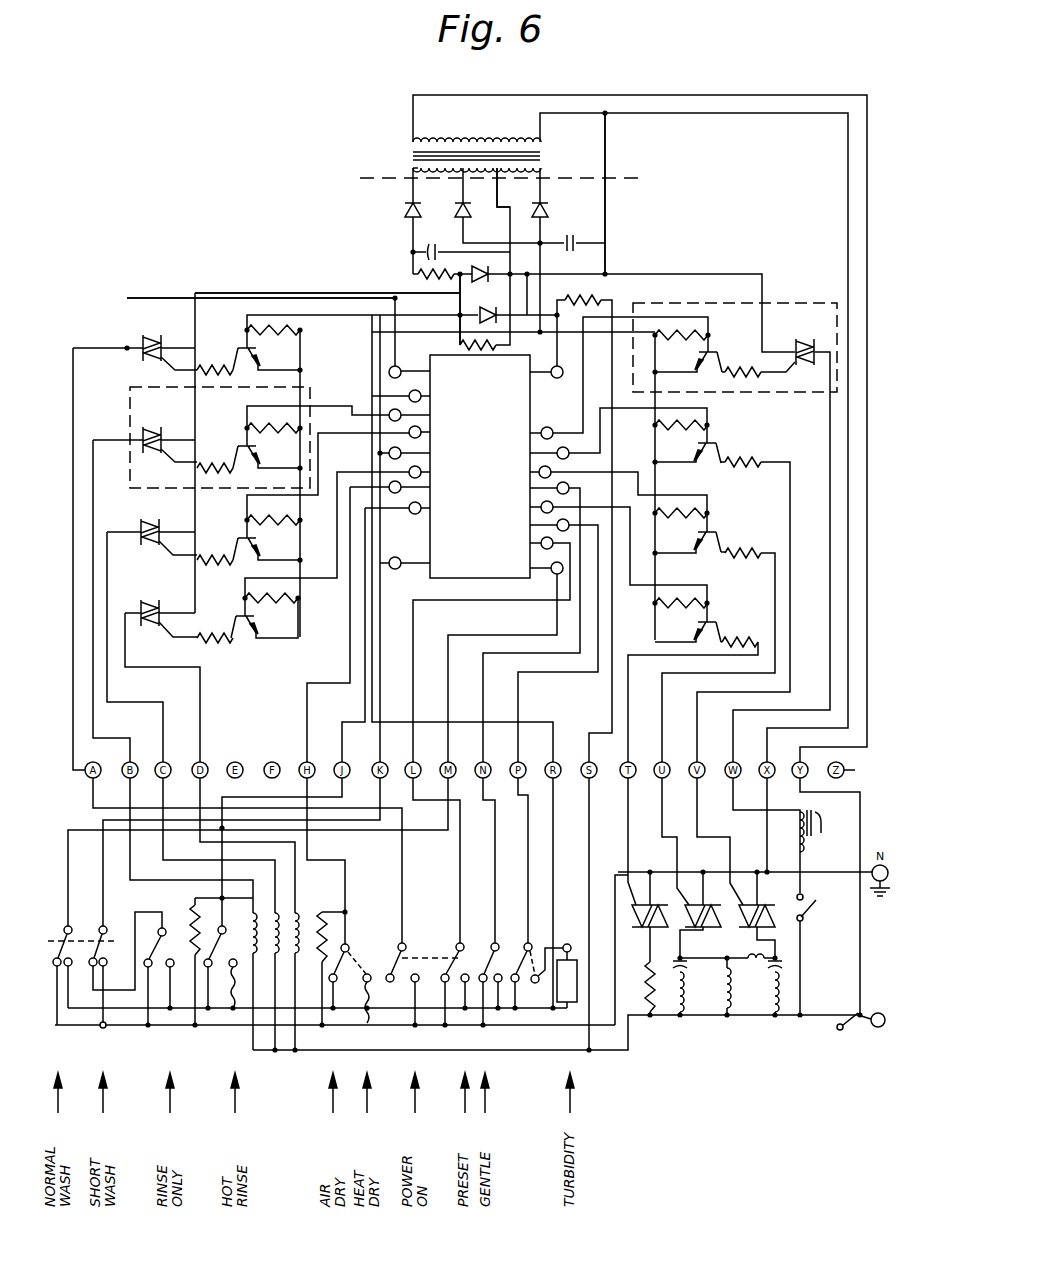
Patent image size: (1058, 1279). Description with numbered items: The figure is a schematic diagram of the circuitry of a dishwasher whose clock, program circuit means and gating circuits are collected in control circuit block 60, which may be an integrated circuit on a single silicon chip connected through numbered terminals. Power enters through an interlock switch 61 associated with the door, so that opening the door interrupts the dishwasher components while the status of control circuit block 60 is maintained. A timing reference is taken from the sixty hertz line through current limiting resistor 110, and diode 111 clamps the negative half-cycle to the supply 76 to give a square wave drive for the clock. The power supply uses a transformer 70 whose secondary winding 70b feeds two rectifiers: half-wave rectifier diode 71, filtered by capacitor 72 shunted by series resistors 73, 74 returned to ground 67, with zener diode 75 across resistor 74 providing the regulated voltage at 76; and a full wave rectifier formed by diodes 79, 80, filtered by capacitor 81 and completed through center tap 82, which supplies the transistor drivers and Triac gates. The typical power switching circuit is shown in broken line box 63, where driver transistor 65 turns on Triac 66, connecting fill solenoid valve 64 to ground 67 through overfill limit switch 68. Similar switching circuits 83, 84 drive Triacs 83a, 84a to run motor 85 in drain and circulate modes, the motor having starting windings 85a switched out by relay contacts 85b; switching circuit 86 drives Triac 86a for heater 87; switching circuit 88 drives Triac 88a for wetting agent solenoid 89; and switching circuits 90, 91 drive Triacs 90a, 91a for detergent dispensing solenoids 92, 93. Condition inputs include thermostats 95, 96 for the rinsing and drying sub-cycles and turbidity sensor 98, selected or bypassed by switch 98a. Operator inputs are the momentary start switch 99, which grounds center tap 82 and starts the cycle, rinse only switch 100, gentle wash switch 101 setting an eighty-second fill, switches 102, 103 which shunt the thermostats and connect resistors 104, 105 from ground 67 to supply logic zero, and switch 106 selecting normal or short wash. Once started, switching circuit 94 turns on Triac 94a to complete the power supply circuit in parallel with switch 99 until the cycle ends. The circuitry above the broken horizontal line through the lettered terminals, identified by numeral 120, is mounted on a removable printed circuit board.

The control circuit block 60 is at (500, 406).
The interlock switch 61 is at (840, 1032).
The broken line box 63 is at (766, 302).
The fill solenoid valve 64 is at (817, 830).
The driver transistor 65 is at (704, 370).
The Triac 66 is at (808, 341).
The ground 67 is at (613, 220).
The overfill limit switch 68 is at (810, 912).
The transformer 70 is at (428, 141).
The secondary winding 70b is at (546, 170).
The half-wave rectifier diode 71 is at (403, 212).
The capacitor 72 is at (436, 242).
The resistor 73 is at (414, 275).
The resistor 74 is at (458, 346).
The zener diode 75 is at (472, 268).
The regulated output voltage 76 is at (458, 280).
The diode 79 is at (466, 218).
The diode 80 is at (550, 210).
The capacitor 81 is at (580, 233).
The center tap 82 is at (512, 187).
The switching circuit 83 is at (752, 449).
The Triac 83a is at (773, 884).
The switching circuit 84 is at (752, 539).
The Triac 84a is at (712, 884).
The motor 85 is at (715, 1004).
The starting windings 85a is at (678, 1014).
The relay contacts 85b is at (784, 966).
The switching circuit 86 is at (752, 629).
The Triac 86a is at (660, 884).
The heater 87 is at (646, 982).
The switching circuit 88 is at (220, 606).
The Triac 88a is at (168, 602).
The solenoid 89 is at (296, 912).
The switching circuit 90 is at (220, 528).
The Triac 90a is at (168, 522).
The switching circuit 91 is at (220, 436).
The Triac 91a is at (168, 431).
The detergent dispensing solenoid 92 is at (268, 910).
The detergent dispensing solenoid 93 is at (249, 915).
The switching circuit 94 is at (220, 338).
The Triac 94a is at (157, 336).
The thermostat 95 is at (231, 982).
The thermostat 96 is at (373, 996).
The turbidity sensor 98 is at (578, 938).
The switch 98a is at (520, 952).
The switch 99 is at (410, 952).
The switch 100 is at (168, 950).
The switch 101 is at (488, 956).
The switch 102 is at (218, 948).
The switch 103 is at (351, 955).
The resistor 104 is at (187, 920).
The resistor 105 is at (340, 928).
The switch 106 is at (92, 923).
The current limiting resistor 110 is at (602, 302).
The diode 111 is at (502, 320).
The printed circuit board portion 120 is at (333, 291).